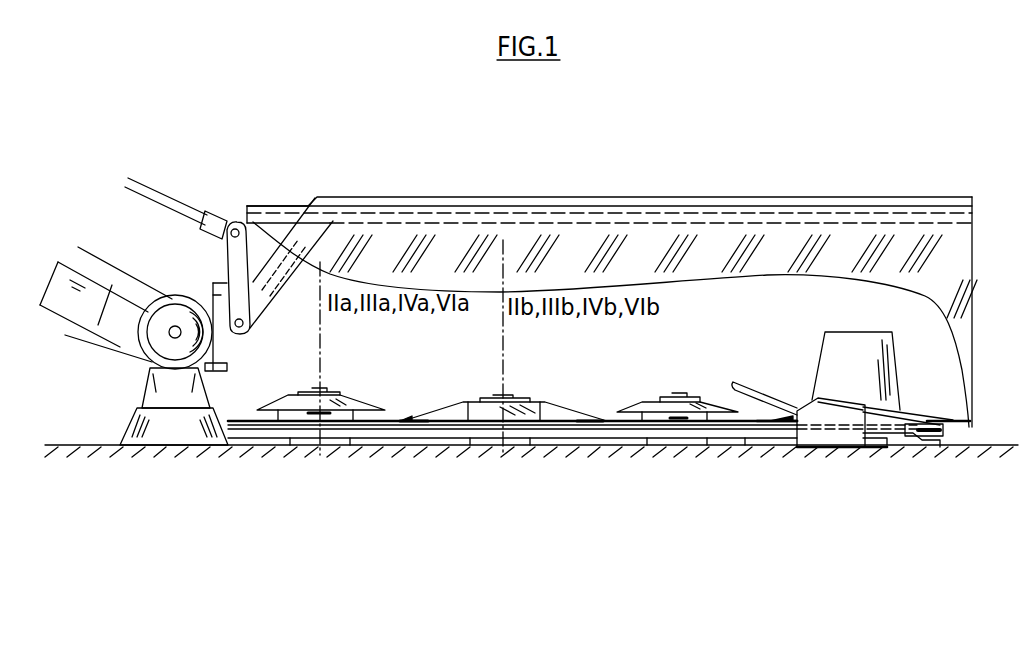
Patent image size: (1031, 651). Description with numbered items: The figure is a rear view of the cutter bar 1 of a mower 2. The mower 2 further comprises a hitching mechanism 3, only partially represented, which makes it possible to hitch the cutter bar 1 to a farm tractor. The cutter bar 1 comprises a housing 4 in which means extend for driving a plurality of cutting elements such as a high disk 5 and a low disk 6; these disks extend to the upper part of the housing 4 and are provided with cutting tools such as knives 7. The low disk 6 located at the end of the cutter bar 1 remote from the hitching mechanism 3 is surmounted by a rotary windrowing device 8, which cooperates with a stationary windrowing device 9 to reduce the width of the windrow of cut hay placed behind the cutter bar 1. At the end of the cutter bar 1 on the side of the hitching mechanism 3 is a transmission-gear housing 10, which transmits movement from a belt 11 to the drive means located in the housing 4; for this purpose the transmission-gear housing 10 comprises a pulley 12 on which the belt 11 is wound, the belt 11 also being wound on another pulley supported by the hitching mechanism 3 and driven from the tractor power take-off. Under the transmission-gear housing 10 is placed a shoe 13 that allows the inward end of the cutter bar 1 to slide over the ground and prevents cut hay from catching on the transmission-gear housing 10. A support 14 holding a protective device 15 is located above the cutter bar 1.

The cutter bar 1 is at (510, 500).
The mower 2 is at (588, 242).
The hitching mechanism 3 is at (112, 248).
The housing 4 is at (372, 432).
The high disk 5 is at (362, 402).
The low disk 6 is at (465, 405).
The knives 7 is at (315, 414).
The rotary windrowing device 8 is at (835, 351).
The stationary windrowing device 9 is at (830, 437).
The transmission-gear housing 10 is at (160, 384).
The belt 11 is at (128, 277).
The pulley 12 is at (182, 320).
The shoe 13 is at (172, 432).
The support 14 is at (411, 197).
The protective device 15 is at (747, 267).